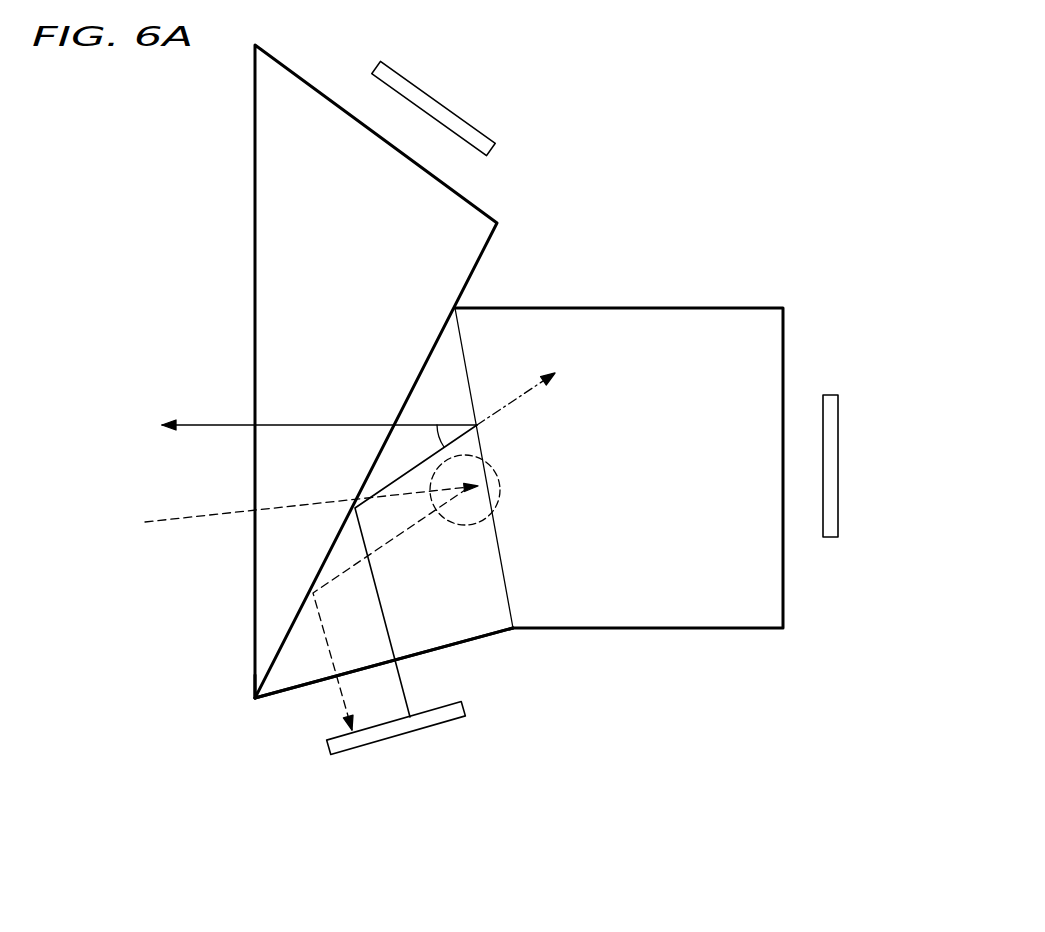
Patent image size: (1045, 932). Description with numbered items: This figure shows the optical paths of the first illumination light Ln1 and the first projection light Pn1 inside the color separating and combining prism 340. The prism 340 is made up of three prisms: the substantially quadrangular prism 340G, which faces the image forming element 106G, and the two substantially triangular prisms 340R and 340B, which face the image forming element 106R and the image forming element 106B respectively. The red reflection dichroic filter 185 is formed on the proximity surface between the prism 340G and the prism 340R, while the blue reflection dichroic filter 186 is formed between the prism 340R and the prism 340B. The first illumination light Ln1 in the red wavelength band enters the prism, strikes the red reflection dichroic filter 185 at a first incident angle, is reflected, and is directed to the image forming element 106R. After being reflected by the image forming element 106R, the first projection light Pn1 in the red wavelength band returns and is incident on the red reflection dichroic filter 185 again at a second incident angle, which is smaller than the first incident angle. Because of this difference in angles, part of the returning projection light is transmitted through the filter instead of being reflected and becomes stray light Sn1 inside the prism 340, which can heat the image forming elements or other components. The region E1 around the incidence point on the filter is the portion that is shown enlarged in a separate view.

The color separating and combining prism 340 is at (532, 406).
The prism 340B is at (273, 77).
The prism 340R is at (293, 677).
The prism 340G is at (740, 322).
The image forming element 106B is at (440, 108).
The image forming element 106R is at (423, 730).
The image forming element 106G is at (838, 472).
The red reflection dichroic filter 185 is at (517, 640).
The blue reflection dichroic filter 186 is at (250, 712).
The first projection light Pn1 is at (215, 423).
The stray light Sn1 is at (527, 400).
The first illumination light Ln1 is at (175, 522).
The region E1 is at (500, 500).